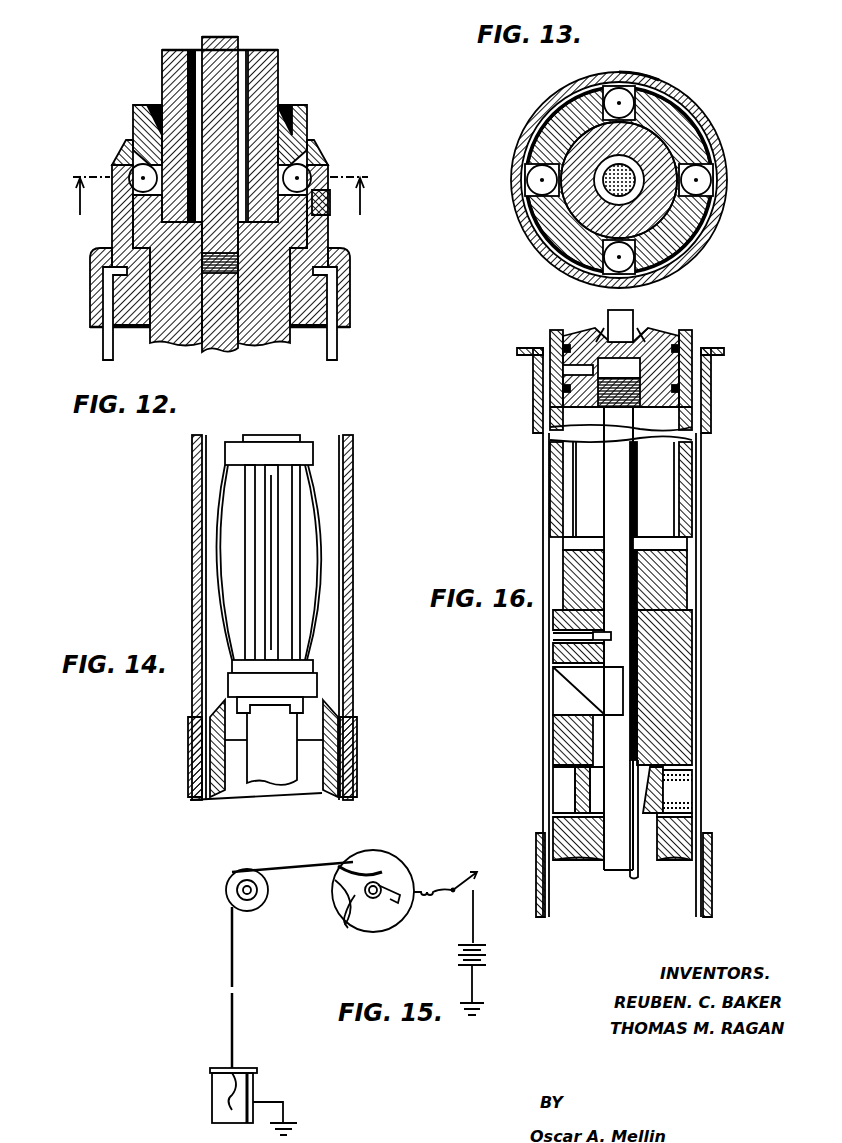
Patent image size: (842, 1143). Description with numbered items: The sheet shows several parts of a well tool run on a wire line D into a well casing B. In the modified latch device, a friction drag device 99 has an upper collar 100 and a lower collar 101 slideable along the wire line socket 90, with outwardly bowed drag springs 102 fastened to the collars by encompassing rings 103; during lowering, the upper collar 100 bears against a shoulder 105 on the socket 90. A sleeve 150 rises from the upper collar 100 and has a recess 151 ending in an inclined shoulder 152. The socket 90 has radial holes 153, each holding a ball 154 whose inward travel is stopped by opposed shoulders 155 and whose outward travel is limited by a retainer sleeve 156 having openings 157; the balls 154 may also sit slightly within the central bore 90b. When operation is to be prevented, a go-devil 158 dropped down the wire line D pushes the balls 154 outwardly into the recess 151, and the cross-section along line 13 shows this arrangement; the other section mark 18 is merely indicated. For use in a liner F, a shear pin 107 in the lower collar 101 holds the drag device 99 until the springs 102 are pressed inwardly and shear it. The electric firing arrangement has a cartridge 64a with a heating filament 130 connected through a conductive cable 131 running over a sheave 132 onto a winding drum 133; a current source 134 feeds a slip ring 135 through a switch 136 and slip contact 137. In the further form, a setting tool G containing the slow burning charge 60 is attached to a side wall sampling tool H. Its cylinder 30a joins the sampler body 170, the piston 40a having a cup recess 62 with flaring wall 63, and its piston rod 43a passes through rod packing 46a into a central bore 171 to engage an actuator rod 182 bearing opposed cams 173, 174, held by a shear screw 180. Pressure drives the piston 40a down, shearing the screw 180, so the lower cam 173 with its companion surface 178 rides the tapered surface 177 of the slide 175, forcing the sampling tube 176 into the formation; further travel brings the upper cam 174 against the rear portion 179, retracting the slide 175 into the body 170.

In FIG. 12, the wire line socket 90 is at (165, 330).
In FIG. 12, the wire line D is at (235, 40).
In FIG. 13, the wire line D is at (600, 193).
In FIG. 12, the go-devil 158 is at (278, 62).
In FIG. 13, the go-devil 158 is at (700, 240).
In FIG. 12, the central bore 90b is at (300, 112).
In FIG. 12, the radial holes 153 is at (148, 128).
In FIG. 13, the radial holes 153 is at (650, 105).
In FIG. 12, the retainer sleeve 156 is at (132, 150).
In FIG. 13, the retainer sleeve 156 is at (545, 130).
In FIG. 12, the inclined shoulder 152 is at (118, 155).
In FIG. 12, the ball detent 154 is at (316, 152).
In FIG. 13, the ball detent 154 is at (617, 88).
In FIG. 12, the sleeve 150 is at (112, 220).
In FIG. 13, the sleeve 150 is at (534, 260).
In FIG. 12, the recess 151 is at (312, 213).
In FIG. 12, the shoulder 105 is at (300, 243).
In FIG. 12, the encompassing rings 103 is at (352, 275).
In FIG. 14, the encompassing rings 103 is at (235, 683).
In FIG. 12, the upper collar 100 is at (320, 300).
In FIG. 12, the drag springs 102 is at (102, 345).
In FIG. 14, the drag springs 102 is at (217, 560).
In FIG. 12, the section line 13 is at (83, 207).
In FIG. 12, the section line 18 is at (360, 197).
In FIG. 13, the shoulders 155 is at (700, 145).
In FIG. 13, the openings 157 is at (590, 110).
In FIG. 14, the friction drag device 99 is at (322, 498).
In FIG. 14, the well casing B is at (352, 593).
In FIG. 14, the lower collar 101 is at (270, 710).
In FIG. 14, the shear pin 107 is at (315, 700).
In FIG. 14, the liner F is at (350, 790).
In FIG. 15, the heating filament 130 is at (215, 1098).
In FIG. 15, the conductive wire line cable 131 is at (235, 1022).
In FIG. 15, the sheave 132 is at (265, 900).
In FIG. 15, the winding drum 133 is at (385, 855).
In FIG. 15, the source of current 134 is at (485, 957).
In FIG. 15, the slip ring 135 is at (350, 915).
In FIG. 15, the switch 136 is at (465, 880).
In FIG. 15, the slip contact 137 is at (395, 885).
In FIG. 15, the cartridge 64a is at (255, 1085).
In FIG. 16, the setting tool G is at (713, 423).
In FIG. 16, the cylinder 30a is at (697, 475).
In FIG. 16, the piston 40a is at (692, 370).
In FIG. 16, the combustion charge 60 is at (633, 315).
In FIG. 16, the cup shaped recess 62 is at (640, 330).
In FIG. 16, the cup wall 63 is at (600, 322).
In FIG. 16, the piston rod 43a is at (605, 505).
In FIG. 16, the rod packing 46a is at (650, 568).
In FIG. 16, the central bore 171 is at (650, 610).
In FIG. 16, the actuator rod 182 is at (640, 650).
In FIG. 16, the sampler body 170 is at (680, 640).
In FIG. 16, the side wall sampling tool H is at (697, 714).
In FIG. 16, the shear screw 180 is at (600, 637).
In FIG. 16, the upper cam 174 is at (610, 683).
In FIG. 16, the lower cam 173 is at (650, 765).
In FIG. 16, the rear portion of slide 179 is at (595, 783).
In FIG. 16, the companion surface 178 is at (648, 795).
In FIG. 16, the sampling tube 176 is at (694, 780).
In FIG. 16, the slide 175 is at (694, 813).
In FIG. 16, the tapered surface 177 is at (635, 870).